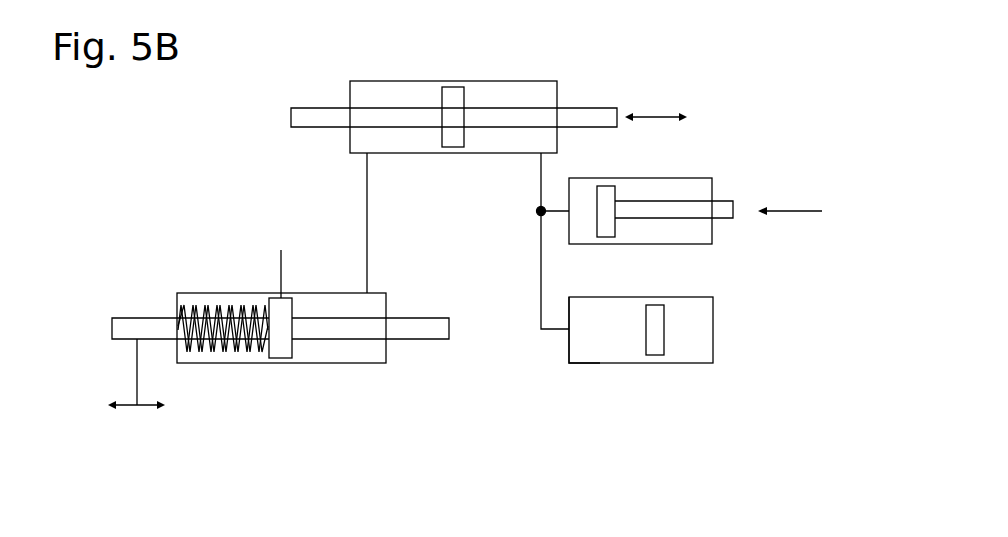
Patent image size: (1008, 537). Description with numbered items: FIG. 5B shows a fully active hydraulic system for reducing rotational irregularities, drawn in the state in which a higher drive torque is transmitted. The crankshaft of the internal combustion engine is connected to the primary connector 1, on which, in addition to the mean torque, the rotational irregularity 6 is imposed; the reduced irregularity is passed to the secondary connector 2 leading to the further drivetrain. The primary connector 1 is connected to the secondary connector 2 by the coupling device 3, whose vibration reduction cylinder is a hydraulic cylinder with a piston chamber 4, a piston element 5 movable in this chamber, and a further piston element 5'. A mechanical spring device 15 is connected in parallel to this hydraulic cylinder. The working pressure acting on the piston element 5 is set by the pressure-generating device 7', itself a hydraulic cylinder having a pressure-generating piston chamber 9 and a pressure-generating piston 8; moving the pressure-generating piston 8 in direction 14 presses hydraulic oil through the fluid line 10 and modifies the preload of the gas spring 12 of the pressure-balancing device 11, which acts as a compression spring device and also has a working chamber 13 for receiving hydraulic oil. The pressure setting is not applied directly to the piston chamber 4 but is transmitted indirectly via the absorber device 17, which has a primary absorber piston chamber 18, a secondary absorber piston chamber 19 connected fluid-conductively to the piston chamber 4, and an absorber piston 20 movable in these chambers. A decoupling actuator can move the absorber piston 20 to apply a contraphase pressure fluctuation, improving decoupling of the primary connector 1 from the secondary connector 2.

The primary connector 1 is at (135, 372).
The secondary connector 2 is at (274, 276).
The coupling device 3 is at (300, 329).
The piston chamber 4 is at (338, 348).
The piston element 5 is at (337, 365).
The further piston element 5' is at (139, 286).
The rotational irregularity 6 is at (147, 408).
The pressure-generating device 7' is at (666, 202).
The pressure-generating piston 8 is at (720, 220).
The pressure-generating piston chamber 9 is at (583, 193).
The fluid line 10 is at (541, 253).
The pressure-balancing device 11 is at (677, 370).
The gas spring 12 is at (676, 352).
The working chamber 13 is at (580, 352).
The direction 14 is at (793, 210).
The mechanical spring device 15 is at (208, 353).
The absorber device 17 is at (442, 82).
The primary absorber piston chamber 18 is at (510, 92).
The secondary absorber piston chamber 19 is at (425, 87).
The absorber piston 20 is at (291, 115).